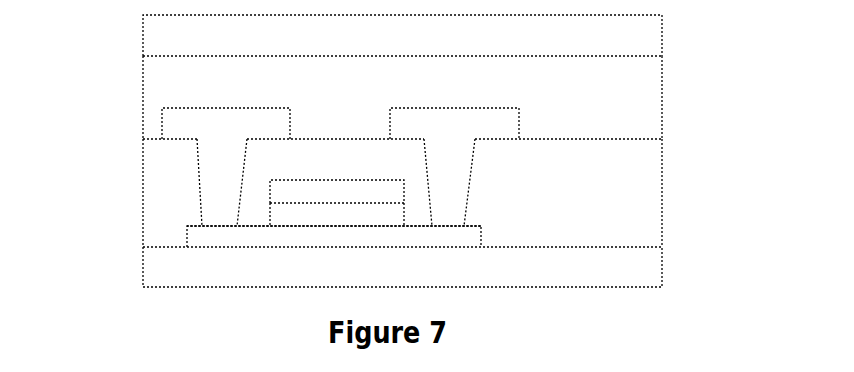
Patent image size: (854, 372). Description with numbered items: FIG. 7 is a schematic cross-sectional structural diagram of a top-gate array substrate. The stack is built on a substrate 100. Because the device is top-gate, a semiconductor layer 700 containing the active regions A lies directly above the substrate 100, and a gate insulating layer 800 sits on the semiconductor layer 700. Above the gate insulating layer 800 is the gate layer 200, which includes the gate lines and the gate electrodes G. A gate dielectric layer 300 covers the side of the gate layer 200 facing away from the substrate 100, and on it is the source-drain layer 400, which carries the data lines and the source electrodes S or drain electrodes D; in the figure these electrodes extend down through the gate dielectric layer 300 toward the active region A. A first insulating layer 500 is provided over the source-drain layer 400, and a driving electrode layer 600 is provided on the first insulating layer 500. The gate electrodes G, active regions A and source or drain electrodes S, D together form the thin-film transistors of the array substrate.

The substrate 100 is at (662, 270).
The gate layer 200 is at (270, 190).
The gate dielectric layer 300 is at (662, 218).
The source-drain layer 400 is at (162, 124).
The first insulating layer 500 is at (662, 78).
The driving electrode layer 600 is at (662, 42).
The semiconductor layer 700 is at (187, 235).
The gate insulating layer 800 is at (270, 217).